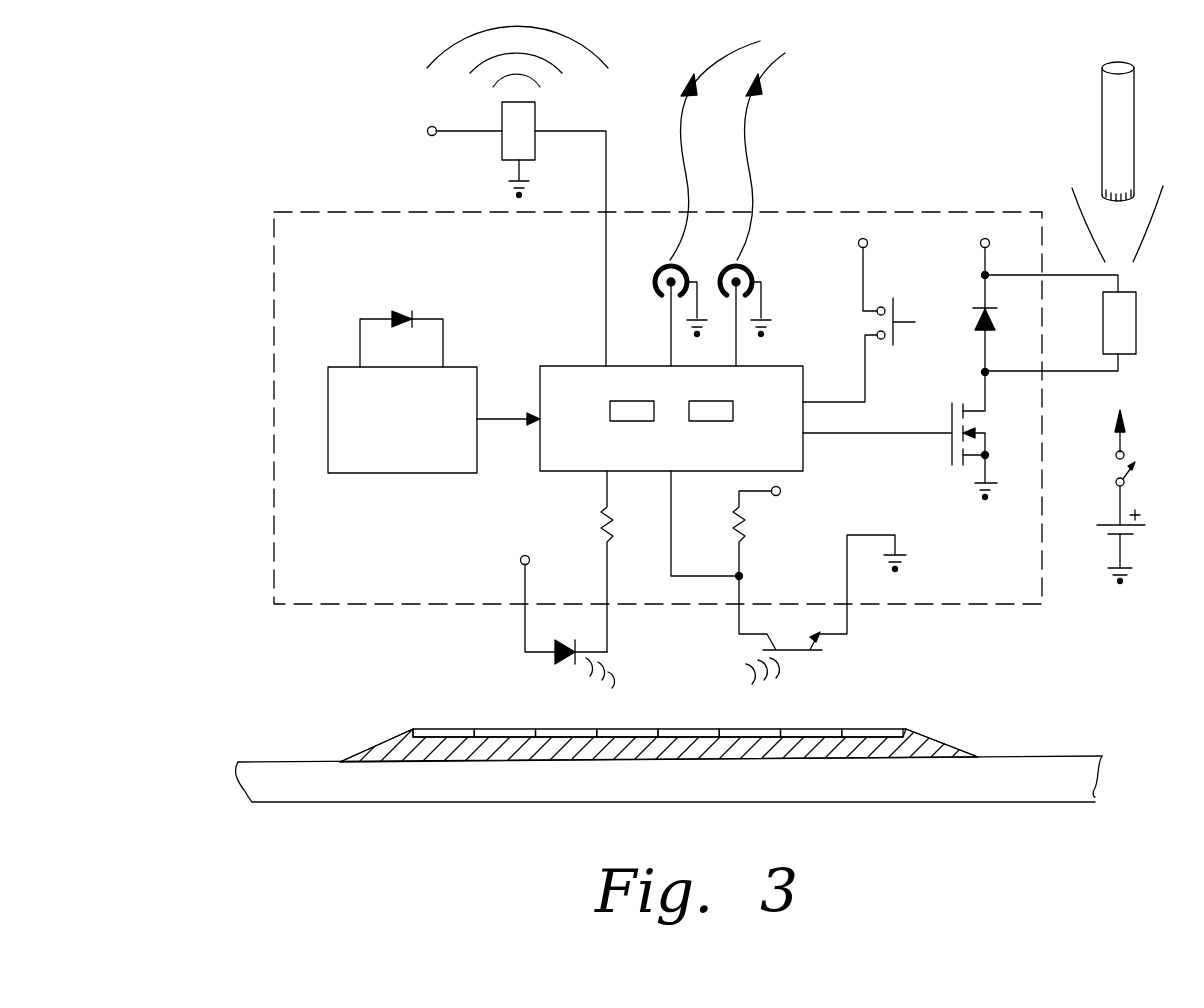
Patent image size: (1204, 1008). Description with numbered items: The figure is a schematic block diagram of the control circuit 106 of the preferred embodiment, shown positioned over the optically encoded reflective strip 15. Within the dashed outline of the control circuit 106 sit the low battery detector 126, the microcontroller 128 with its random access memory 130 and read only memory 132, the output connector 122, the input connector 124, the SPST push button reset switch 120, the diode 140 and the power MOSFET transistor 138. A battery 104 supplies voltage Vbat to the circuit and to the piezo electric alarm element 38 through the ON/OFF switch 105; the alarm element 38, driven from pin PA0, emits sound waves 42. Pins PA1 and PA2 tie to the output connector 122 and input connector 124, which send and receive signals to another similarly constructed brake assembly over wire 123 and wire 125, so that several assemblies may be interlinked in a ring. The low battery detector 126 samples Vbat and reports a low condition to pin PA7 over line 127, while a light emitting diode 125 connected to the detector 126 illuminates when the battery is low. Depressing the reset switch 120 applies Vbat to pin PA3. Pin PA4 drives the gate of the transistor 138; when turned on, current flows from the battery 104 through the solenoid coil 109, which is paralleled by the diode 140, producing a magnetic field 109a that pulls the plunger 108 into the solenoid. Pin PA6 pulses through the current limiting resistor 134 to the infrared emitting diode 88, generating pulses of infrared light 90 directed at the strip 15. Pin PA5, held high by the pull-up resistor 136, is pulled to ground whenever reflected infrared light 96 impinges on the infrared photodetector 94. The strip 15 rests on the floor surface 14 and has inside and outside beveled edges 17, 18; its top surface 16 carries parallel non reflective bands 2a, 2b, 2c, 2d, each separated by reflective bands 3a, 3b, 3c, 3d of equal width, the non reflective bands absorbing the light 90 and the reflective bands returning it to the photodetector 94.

The sound waves 42 is at (570, 42).
The piezo electric alarm element 38 is at (502, 160).
The wire 123 is at (687, 162).
The light emitting diode 125 is at (752, 162).
The output connector 122 is at (683, 269).
The input connector 124 is at (748, 269).
The microcontroller 128 is at (697, 403).
The random access memory 130 is at (612, 424).
The read only memory 132 is at (691, 424).
The low battery voltage detector 126 is at (477, 473).
The line 127 is at (484, 419).
The SPST push button reset switch 120 is at (893, 298).
The power MOSFET transistor 138 is at (952, 404).
The diode 140 is at (976, 330).
The solenoid coil 109 is at (1136, 354).
The magnetic field 109a is at (1150, 214).
The plunger 108 is at (1134, 121).
The ON/OFF switch 105 is at (1134, 468).
The battery 104 is at (1145, 525).
The control circuit 106 is at (1042, 604).
The current limiting resistor 134 is at (611, 539).
The pull-up resistor 136 is at (741, 539).
The infrared emitting diode 88 is at (561, 663).
The infrared light 90 is at (616, 690).
The infrared light 96 is at (752, 686).
The infrared photodetector 94 is at (822, 652).
The floor surface 14 is at (295, 762).
The optically encoded reflective arc shaped strip 15 is at (413, 729).
The top surface 16 is at (903, 729).
The inside beveled edge 17 is at (378, 746).
The outside beveled edge 18 is at (932, 741).
The non reflective band 2a is at (432, 729).
The reflective band 3a is at (487, 729).
The non reflective band 2b is at (547, 729).
The reflective band 3b is at (617, 729).
The non reflective band 2c is at (677, 729).
The reflective band 3c is at (739, 729).
The non reflective band 2d is at (797, 729).
The reflective band 3d is at (852, 729).